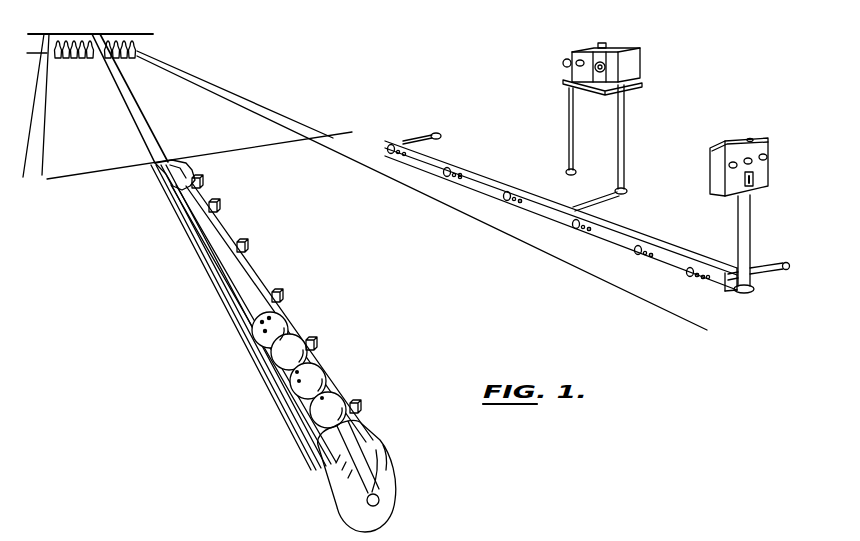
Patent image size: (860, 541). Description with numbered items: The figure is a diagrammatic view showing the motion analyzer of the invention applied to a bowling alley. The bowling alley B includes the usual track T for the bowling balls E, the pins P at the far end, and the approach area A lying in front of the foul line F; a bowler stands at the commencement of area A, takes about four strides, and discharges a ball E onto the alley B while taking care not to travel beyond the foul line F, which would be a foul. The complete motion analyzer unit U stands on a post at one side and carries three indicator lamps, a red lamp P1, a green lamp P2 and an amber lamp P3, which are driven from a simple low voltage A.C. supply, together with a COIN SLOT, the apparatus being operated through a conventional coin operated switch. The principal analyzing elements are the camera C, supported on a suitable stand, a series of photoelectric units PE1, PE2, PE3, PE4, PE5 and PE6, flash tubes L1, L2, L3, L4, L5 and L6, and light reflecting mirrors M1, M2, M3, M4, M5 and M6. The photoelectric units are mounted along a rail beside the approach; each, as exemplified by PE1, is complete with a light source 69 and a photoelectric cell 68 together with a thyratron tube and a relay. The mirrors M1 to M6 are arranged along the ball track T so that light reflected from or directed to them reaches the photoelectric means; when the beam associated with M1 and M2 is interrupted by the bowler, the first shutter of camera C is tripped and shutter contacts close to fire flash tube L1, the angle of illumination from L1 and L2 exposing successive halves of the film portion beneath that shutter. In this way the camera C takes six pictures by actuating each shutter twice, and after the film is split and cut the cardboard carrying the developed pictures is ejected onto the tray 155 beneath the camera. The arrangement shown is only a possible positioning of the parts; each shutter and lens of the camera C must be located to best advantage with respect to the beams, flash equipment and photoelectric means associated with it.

The pins P is at (140, 46).
The bowling alley B is at (253, 115).
The foul line F is at (240, 148).
The track T is at (247, 305).
The bowling balls E is at (318, 424).
The light reflecting mirror M1 is at (362, 414).
The light reflecting mirror M2 is at (318, 349).
The light reflecting mirror M3 is at (284, 298).
The light reflecting mirror M4 is at (249, 248).
The light reflecting mirror M5 is at (221, 208).
The light reflecting mirror M6 is at (203, 184).
The area in front of the foul line A is at (395, 265).
The flash tube L1 is at (687, 274).
The flash tube L2 is at (637, 255).
The flash tube L3 is at (576, 229).
The flash tube L4 is at (507, 202).
The flash tube L5 is at (445, 176).
The flash tube L6 is at (385, 152).
The photoelectric unit PE1 is at (703, 270).
The photoelectric unit PE2 is at (650, 243).
The photoelectric unit PE3 is at (591, 226).
The photoelectric unit PE4 is at (516, 196).
The photoelectric unit PE5 is at (457, 170).
The photoelectric unit PE6 is at (407, 139).
The photoelectric cell 68 is at (697, 279).
The light source 69 is at (709, 280).
The camera C is at (637, 62).
The tray 155 is at (628, 85).
The motion analyzer unit U is at (682, 122).
The indicator lamp P1 is at (731, 160).
The indicator lamp P2 is at (748, 157).
The indicator lamp P3 is at (766, 155).
The coin slot COIN SLOT is at (754, 178).